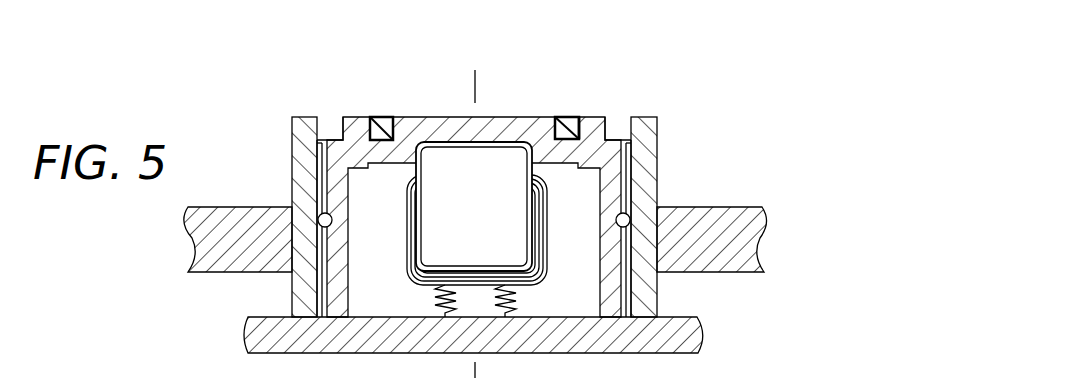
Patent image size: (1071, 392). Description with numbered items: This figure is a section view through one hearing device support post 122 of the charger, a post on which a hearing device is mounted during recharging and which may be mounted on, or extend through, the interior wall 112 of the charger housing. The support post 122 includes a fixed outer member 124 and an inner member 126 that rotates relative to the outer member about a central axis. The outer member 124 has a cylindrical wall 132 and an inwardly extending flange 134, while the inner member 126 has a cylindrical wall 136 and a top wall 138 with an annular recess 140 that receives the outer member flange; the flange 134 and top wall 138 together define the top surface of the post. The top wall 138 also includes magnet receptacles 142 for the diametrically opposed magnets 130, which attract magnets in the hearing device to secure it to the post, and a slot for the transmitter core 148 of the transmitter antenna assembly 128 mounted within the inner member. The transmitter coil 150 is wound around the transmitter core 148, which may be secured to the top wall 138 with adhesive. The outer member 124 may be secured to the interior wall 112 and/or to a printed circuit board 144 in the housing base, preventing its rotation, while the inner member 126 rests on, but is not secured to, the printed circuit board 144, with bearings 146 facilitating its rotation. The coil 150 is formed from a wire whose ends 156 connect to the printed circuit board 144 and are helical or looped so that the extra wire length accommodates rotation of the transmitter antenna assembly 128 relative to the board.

The interior wall 112 is at (190, 232).
The hearing device support post 122 is at (700, 115).
The fixed outer member 124 is at (291, 115).
The inner member 126 is at (627, 155).
The transmitter antenna assembly 128 is at (474, 206).
The magnets 130 is at (563, 115).
The cylindrical wall 132 is at (293, 147).
The inwardly extending flange 134 is at (343, 134).
The cylindrical wall 136 is at (632, 188).
The top wall 138 is at (348, 116).
The annular recess 140 is at (617, 139).
The magnet receptacles 142 is at (583, 115).
The printed circuit board 144 is at (437, 143).
The bearings 146 is at (318, 216).
The transmitter core 148 is at (523, 245).
The transmitter coil 150 is at (406, 211).
The wire ends 156 is at (435, 294).